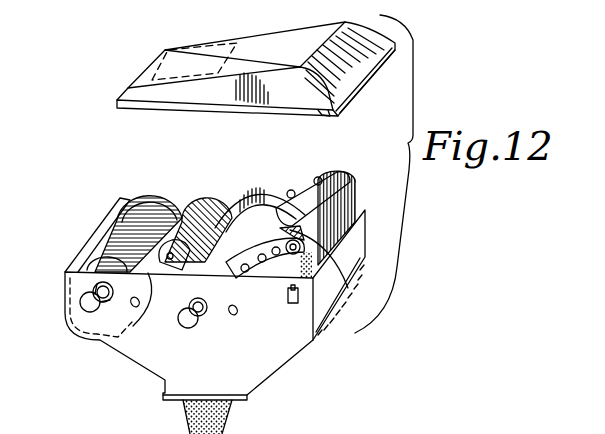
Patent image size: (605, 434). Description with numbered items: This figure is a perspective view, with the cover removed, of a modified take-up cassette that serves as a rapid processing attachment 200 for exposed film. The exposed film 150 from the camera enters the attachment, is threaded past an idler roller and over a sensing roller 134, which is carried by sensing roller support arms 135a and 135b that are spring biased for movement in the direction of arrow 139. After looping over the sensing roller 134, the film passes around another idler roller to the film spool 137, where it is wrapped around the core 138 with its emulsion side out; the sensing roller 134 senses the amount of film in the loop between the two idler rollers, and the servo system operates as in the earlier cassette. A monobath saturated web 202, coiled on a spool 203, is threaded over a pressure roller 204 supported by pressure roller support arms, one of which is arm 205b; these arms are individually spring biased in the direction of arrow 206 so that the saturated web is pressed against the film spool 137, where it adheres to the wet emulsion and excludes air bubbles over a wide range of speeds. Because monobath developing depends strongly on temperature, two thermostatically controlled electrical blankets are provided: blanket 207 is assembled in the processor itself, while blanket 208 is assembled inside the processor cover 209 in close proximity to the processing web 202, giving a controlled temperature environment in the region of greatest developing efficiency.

The sensing roller 134 is at (348, 288).
The sensing roller support arm 135a is at (308, 178).
The sensing roller support arm 135b is at (266, 280).
The film spool 137 is at (266, 168).
The core 138 is at (228, 196).
The arrow 139 is at (385, 427).
The exposed film 150 is at (218, 417).
The rapid processing attachment 200 is at (380, 202).
The monobath saturated web 202 is at (103, 231).
The spool 203 is at (158, 190).
The pressure roller 204 is at (182, 263).
The pressure roller support arm 205b is at (129, 313).
The arrow 206 is at (158, 274).
The thermostatically controlled electrical blanket 207 is at (77, 330).
The thermostatically controlled electrical blanket 208 is at (207, 60).
The processor cover 209 is at (318, 35).